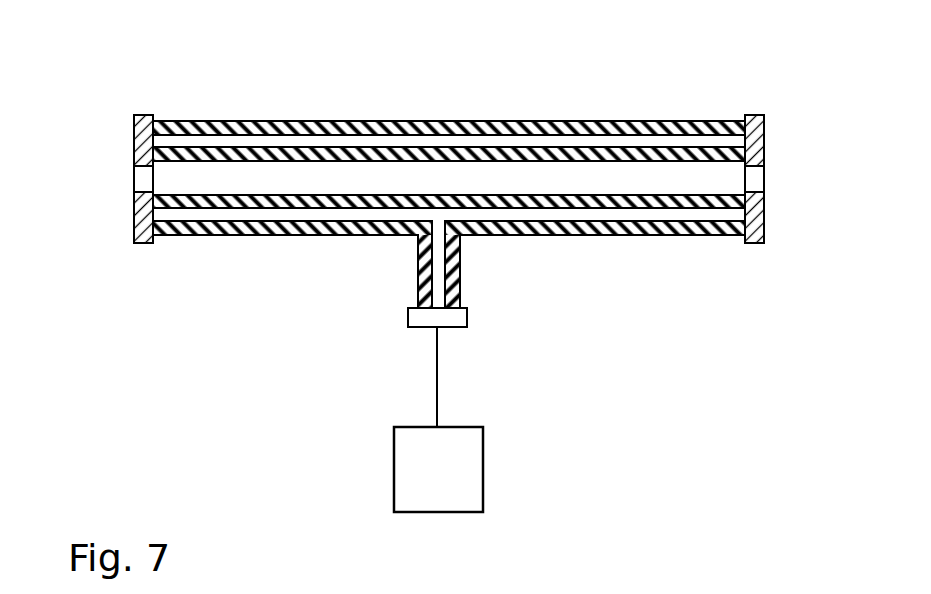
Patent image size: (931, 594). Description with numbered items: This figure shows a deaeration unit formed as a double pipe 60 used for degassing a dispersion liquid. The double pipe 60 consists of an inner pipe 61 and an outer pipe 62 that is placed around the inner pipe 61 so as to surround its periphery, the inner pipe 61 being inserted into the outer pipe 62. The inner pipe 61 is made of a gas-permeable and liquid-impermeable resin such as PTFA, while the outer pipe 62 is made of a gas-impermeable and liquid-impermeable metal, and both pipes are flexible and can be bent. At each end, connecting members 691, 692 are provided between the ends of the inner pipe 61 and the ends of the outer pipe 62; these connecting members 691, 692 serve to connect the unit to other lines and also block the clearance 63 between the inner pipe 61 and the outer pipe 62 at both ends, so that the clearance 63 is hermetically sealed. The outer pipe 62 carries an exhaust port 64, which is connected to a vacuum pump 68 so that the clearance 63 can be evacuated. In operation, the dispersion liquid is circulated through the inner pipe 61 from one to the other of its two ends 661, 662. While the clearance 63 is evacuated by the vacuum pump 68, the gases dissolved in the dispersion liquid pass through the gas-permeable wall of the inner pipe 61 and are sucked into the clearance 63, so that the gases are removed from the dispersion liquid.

The double pipe 60 is at (189, 40).
The inner pipe 61 is at (470, 152).
The outer pipe 62 is at (340, 121).
The clearance 63 is at (737, 146).
The exhaust port 64 is at (437, 232).
The end of inner pipe 661 is at (758, 180).
The end of inner pipe 662 is at (145, 173).
The vacuum pump 68 is at (481, 453).
The connecting member 691 is at (765, 222).
The connecting member 692 is at (145, 220).